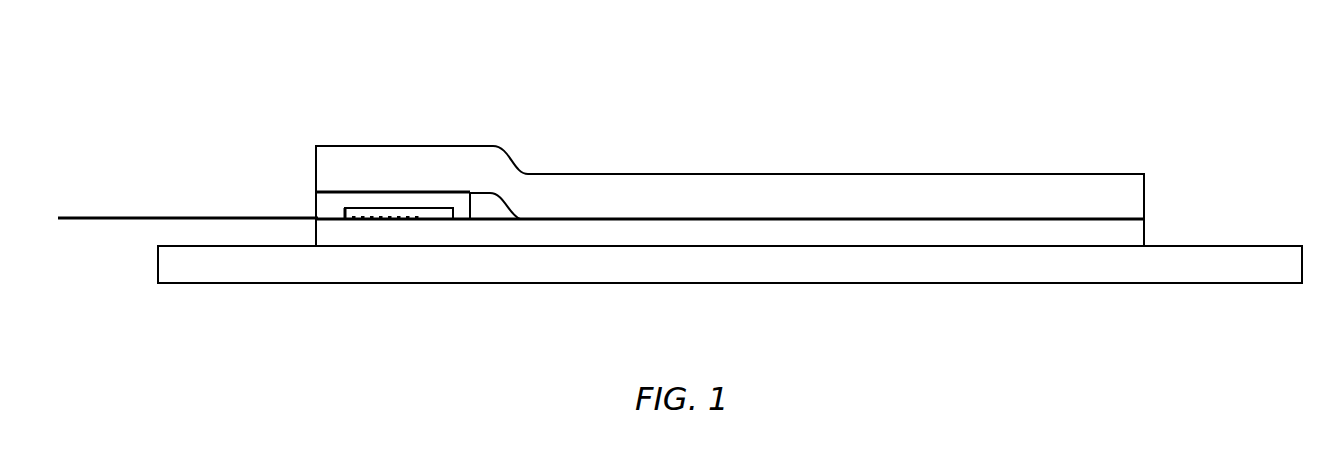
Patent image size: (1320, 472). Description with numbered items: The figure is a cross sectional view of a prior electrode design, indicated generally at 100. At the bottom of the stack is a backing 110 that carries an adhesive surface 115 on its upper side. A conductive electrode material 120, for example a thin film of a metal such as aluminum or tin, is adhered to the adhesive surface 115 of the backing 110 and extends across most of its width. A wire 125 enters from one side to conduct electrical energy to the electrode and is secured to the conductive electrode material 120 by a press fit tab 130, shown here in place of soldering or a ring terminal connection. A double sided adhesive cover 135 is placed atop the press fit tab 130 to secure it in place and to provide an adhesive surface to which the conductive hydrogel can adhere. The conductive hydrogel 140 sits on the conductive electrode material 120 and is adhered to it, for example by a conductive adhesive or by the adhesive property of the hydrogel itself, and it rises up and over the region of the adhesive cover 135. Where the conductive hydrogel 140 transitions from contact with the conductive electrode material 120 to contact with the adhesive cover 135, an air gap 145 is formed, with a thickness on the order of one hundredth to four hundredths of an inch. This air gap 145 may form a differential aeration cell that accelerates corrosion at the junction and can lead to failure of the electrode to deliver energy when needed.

The electrode 100 is at (619, 82).
The backing 110 is at (812, 273).
The adhesive surface 115 is at (1238, 245).
The conductive electrode material 120 is at (1135, 237).
The wire 125 is at (112, 216).
The press fit tab 130 is at (360, 213).
The double sided adhesive cover 135 is at (328, 204).
The conductive hydrogel 140 is at (684, 203).
The air gap 145 is at (487, 206).